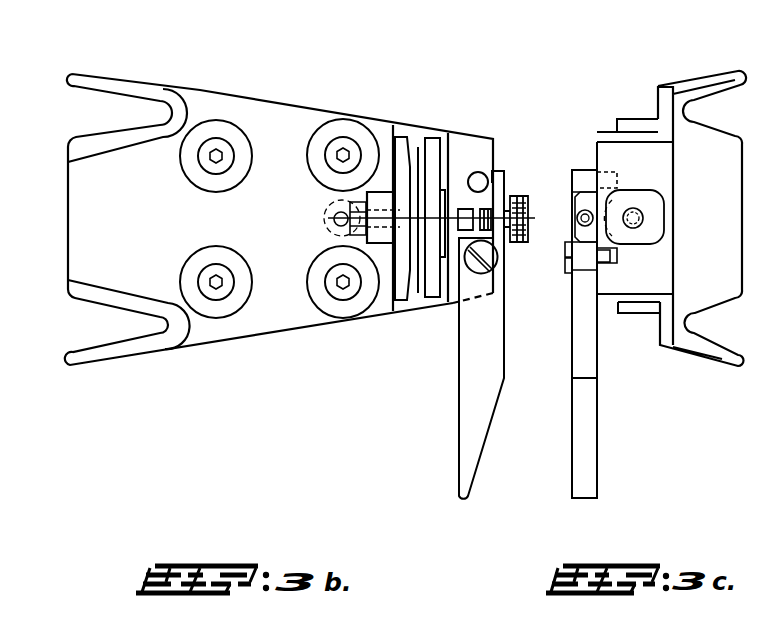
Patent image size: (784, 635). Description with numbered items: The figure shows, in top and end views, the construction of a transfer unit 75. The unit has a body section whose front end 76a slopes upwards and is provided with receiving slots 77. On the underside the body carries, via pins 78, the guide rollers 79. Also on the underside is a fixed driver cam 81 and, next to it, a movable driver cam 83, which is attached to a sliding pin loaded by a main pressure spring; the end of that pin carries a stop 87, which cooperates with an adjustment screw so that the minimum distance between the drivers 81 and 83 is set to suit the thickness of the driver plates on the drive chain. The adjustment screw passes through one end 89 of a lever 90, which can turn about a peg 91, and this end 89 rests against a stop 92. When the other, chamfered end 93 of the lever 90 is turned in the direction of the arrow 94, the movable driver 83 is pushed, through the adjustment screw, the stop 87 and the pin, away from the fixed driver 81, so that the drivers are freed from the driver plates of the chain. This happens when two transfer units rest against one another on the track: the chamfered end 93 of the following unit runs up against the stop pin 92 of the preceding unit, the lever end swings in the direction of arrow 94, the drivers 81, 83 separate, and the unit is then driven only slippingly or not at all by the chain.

In FIG. 3b, the transfer unit 75 is at (289, 98).
In FIG. 3b, the front end of body section 76a is at (80, 203).
In FIG. 3b, the receiving slots 77 is at (118, 107).
In FIG. 3b, the pins 78 is at (215, 139).
In FIG. 3b, the guide roller 79 is at (238, 142).
In FIG. 3b, the fixed driver cam 81 is at (401, 130).
In FIG. 3b, the movable driver cam 83 is at (436, 142).
In FIG. 3b, the stop 87 is at (528, 204).
In FIG. 3b, the end of lever 89 is at (502, 171).
In FIG. 3b, the lever 90 is at (475, 323).
In FIG. 3b, the peg 91 is at (470, 272).
In FIG. 3c, the peg 91 is at (572, 272).
In FIG. 3b, the stop 92 is at (473, 168).
In FIG. 3c, the stop 92 is at (583, 177).
In FIG. 3b, the chamfered end of lever 93 is at (475, 437).
In FIG. 3c, the chamfered end of lever 93 is at (588, 435).
In FIG. 3b, the arrow 94 is at (460, 508).